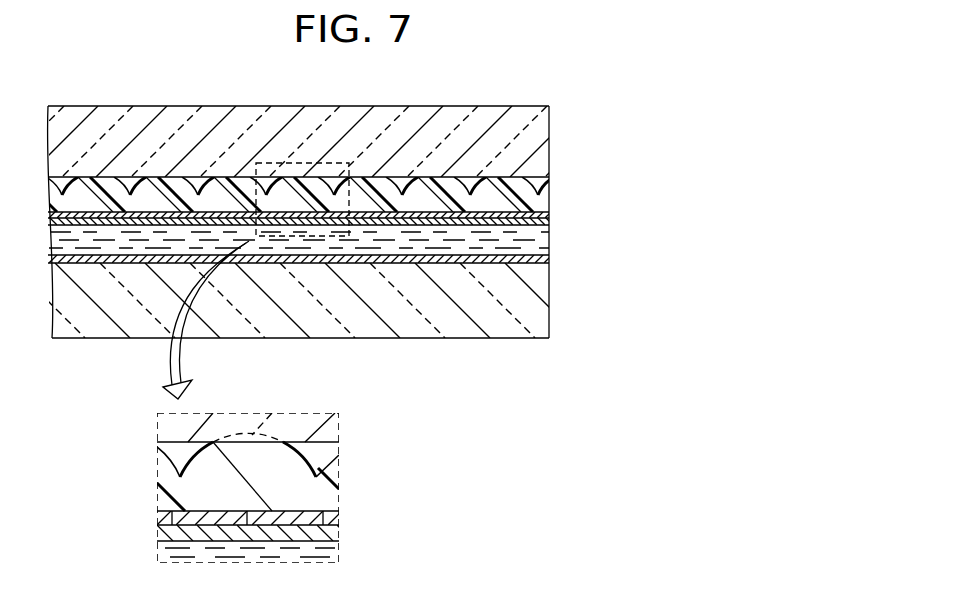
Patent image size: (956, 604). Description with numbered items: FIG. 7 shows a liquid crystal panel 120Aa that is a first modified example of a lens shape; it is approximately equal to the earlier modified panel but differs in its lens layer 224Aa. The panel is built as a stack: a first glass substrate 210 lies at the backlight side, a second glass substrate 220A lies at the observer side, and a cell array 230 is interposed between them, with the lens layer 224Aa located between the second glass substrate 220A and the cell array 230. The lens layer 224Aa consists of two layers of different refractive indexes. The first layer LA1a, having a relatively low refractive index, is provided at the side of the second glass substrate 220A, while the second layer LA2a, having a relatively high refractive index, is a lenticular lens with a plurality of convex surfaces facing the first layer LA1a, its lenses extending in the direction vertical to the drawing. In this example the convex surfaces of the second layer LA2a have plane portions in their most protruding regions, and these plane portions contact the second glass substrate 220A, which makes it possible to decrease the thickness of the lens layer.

The liquid crystal panel 120Aa is at (424, 225).
The second glass substrate 220A is at (540, 118).
The lens layer 224Aa is at (375, 176).
The first layer LA1a is at (470, 188).
The second layer LA2a is at (538, 203).
The cell array 230 is at (575, 212).
The first glass substrate 210 is at (540, 324).